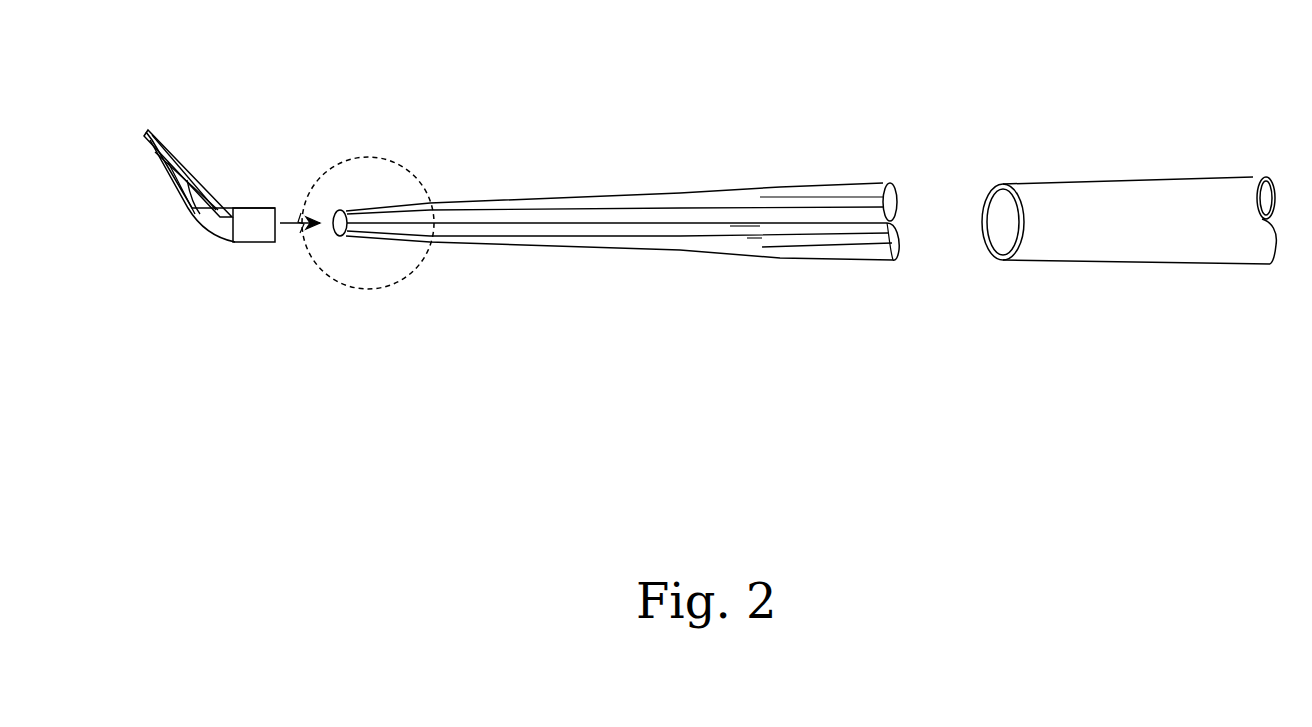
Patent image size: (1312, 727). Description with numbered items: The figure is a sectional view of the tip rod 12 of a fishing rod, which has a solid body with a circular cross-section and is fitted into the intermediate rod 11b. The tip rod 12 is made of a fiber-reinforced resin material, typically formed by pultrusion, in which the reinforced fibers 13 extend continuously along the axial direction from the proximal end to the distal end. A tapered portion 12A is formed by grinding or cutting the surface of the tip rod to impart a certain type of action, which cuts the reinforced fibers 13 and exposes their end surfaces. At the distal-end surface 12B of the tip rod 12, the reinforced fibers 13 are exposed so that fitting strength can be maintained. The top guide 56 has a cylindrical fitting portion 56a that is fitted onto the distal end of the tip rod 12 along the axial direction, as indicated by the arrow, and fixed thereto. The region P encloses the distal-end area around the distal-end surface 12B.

The top guide 56 is at (205, 177).
The fitting portion 56a is at (242, 243).
The proximal end region P is at (357, 293).
The distal-end surface 12B is at (336, 212).
The tip rod 12 is at (790, 148).
The tapered portion 12A is at (530, 197).
The reinforced fibers 13 is at (730, 226).
The intermediate rod 11b is at (1132, 193).